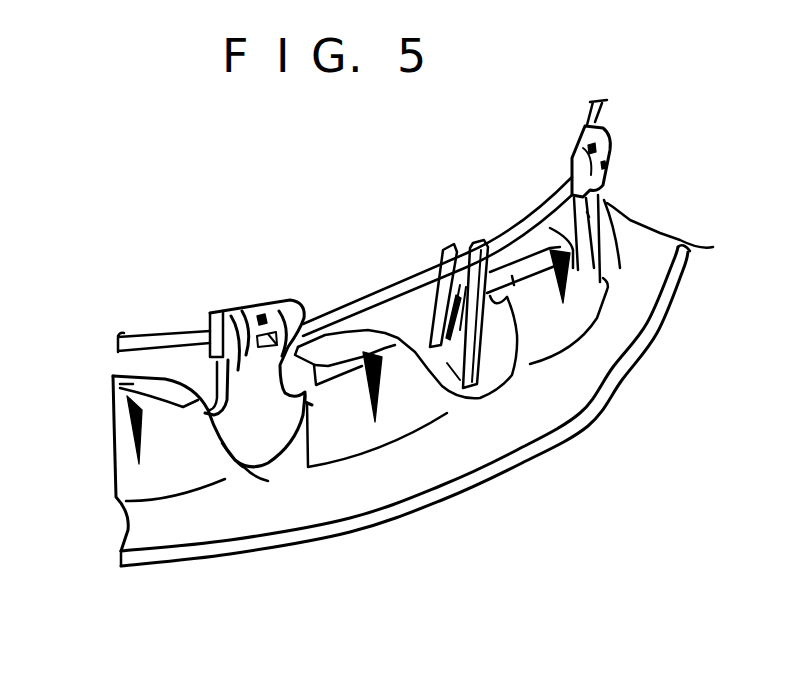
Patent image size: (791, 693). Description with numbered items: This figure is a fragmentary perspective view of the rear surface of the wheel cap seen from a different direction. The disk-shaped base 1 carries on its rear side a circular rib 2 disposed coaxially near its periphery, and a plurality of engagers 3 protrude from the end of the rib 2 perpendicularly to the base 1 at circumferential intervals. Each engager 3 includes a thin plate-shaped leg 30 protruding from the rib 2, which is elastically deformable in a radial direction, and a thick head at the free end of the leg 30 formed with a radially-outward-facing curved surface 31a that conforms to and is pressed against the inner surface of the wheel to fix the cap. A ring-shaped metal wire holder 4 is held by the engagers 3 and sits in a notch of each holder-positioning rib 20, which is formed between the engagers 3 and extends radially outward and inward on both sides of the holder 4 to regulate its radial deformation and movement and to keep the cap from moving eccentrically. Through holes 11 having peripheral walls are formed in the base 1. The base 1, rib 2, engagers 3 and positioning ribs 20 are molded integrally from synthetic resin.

The base 1 is at (335, 510).
The circular rib 2 is at (473, 393).
The engager 3 is at (224, 302).
The ring-shaped metal wire holder 4 is at (384, 288).
The through hole 11 is at (117, 377).
The holder-positioning rib 20 is at (507, 295).
The leg 30 is at (267, 427).
The curved surface 31a is at (262, 310).